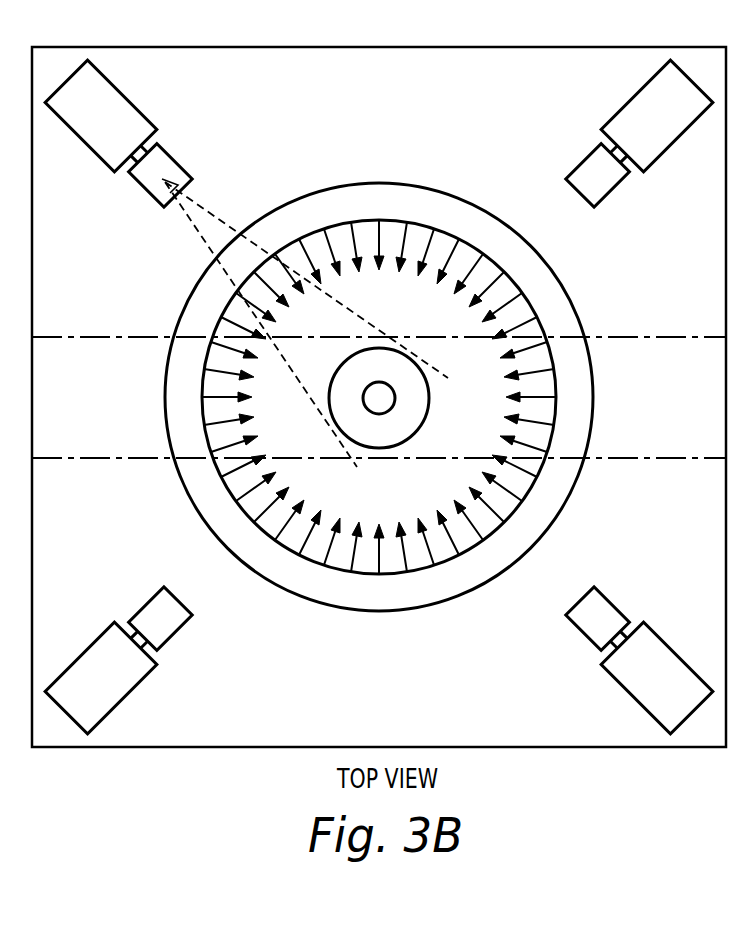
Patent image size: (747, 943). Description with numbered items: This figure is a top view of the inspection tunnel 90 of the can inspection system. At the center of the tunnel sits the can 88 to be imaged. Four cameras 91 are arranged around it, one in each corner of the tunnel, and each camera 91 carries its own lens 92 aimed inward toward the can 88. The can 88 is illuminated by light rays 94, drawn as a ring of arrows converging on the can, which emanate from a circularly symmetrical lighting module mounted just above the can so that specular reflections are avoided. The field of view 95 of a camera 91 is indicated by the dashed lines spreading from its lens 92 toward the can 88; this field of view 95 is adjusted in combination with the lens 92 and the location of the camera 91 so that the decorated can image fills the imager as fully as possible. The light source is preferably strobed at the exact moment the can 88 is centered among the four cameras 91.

The can 88 is at (428, 402).
The inspection tunnel 90 is at (335, 47).
The camera 91 is at (117, 100).
The lens 92 is at (168, 155).
The light rays 94 is at (458, 254).
The field of view 95 is at (262, 247).